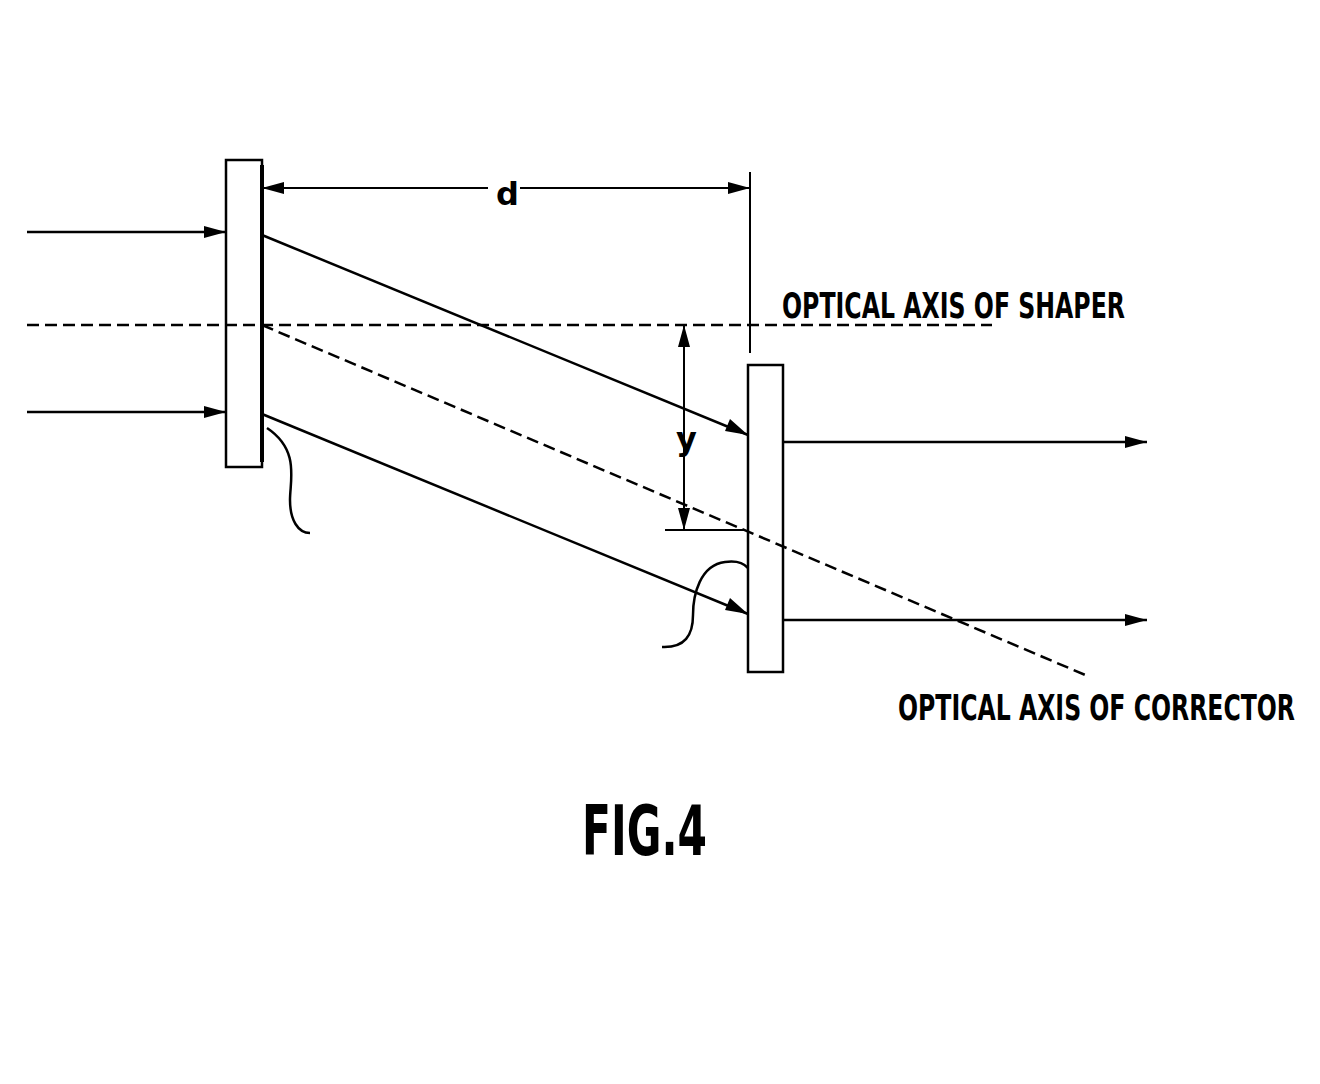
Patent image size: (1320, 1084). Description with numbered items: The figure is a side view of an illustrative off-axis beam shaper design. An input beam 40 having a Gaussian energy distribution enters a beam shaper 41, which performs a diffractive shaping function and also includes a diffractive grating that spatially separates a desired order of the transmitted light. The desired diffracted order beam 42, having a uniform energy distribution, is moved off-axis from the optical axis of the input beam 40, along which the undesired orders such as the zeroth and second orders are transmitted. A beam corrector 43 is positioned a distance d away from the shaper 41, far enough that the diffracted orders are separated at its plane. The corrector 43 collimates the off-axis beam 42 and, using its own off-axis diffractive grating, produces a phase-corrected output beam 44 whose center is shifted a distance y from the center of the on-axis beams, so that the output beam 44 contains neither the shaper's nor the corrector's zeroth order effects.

The input beam 40 is at (135, 412).
The beam shaper 41 is at (234, 467).
The desired diffracted order beam 42 is at (508, 522).
The beam corrector 43 is at (752, 672).
The corrected output beam 44 is at (848, 620).